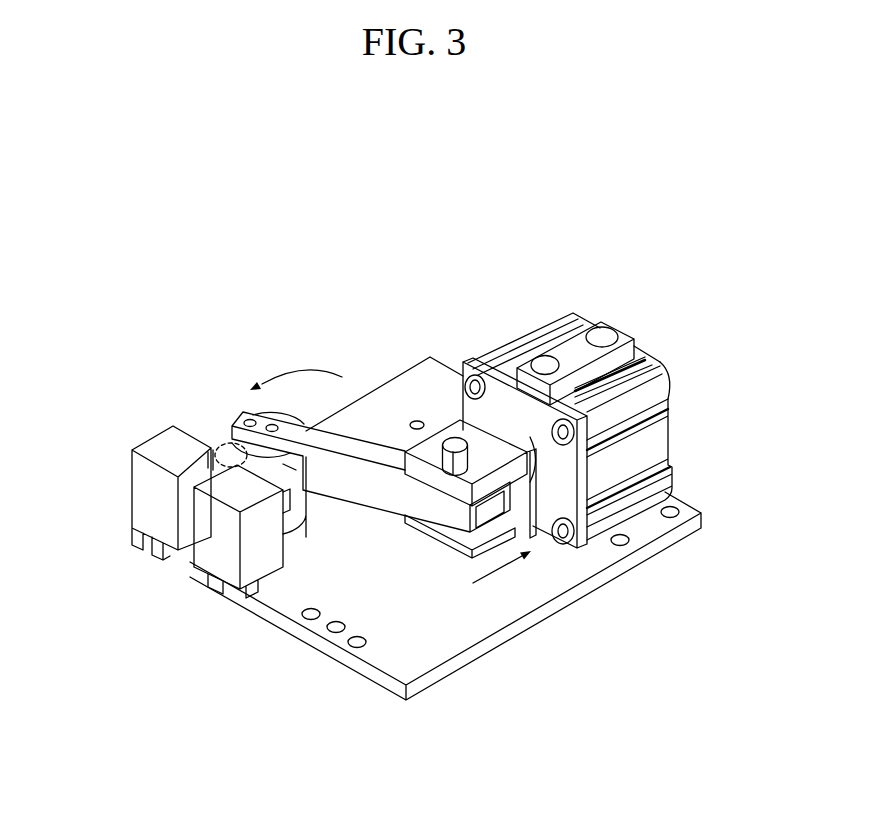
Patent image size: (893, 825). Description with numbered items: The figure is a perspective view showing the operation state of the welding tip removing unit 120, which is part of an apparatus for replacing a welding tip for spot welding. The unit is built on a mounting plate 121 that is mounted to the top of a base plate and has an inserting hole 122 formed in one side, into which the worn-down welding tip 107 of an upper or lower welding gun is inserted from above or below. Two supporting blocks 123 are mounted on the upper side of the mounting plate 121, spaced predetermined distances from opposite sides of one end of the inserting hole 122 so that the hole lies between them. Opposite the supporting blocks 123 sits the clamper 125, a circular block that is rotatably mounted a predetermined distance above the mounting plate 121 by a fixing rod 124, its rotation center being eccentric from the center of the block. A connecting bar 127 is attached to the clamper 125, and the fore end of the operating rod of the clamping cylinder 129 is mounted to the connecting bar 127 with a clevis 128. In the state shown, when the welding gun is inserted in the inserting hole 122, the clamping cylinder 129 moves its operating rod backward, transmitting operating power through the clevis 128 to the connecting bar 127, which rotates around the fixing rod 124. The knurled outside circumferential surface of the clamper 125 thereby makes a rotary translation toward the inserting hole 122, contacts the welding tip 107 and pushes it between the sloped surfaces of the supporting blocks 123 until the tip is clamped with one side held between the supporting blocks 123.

The welding tip 107 is at (218, 444).
The welding tip removing unit 120 is at (433, 282).
The mounting plate 121 is at (443, 640).
The inserting hole 122 is at (200, 576).
The supporting blocks 123 is at (203, 548).
The fixing rod 124 is at (302, 500).
The clamper 125 is at (288, 468).
The connecting bar 127 is at (362, 453).
The clevis 128 is at (457, 432).
The clamping cylinder 129 is at (652, 436).